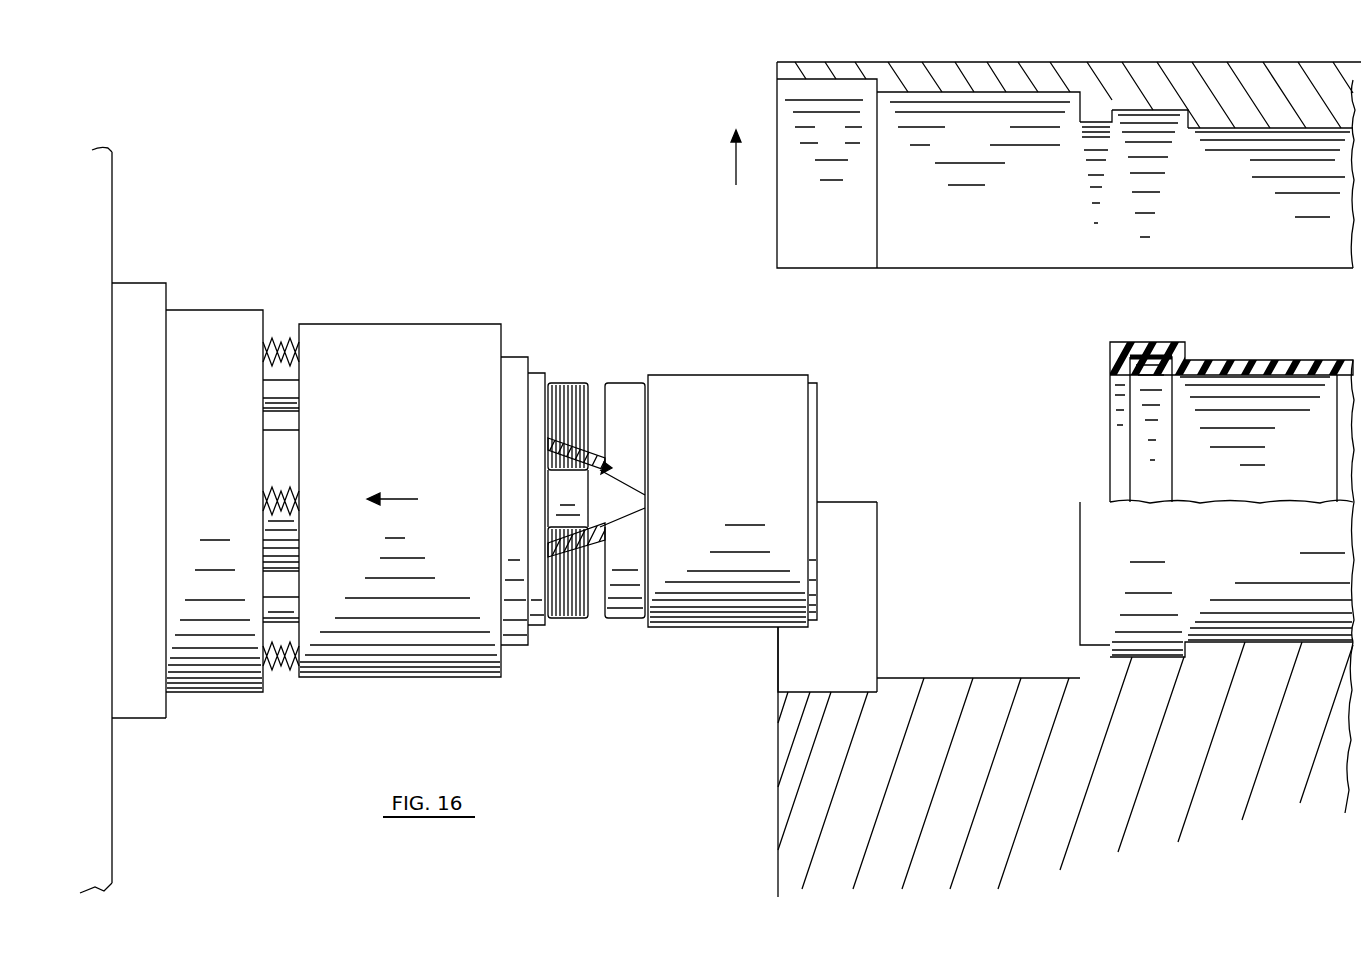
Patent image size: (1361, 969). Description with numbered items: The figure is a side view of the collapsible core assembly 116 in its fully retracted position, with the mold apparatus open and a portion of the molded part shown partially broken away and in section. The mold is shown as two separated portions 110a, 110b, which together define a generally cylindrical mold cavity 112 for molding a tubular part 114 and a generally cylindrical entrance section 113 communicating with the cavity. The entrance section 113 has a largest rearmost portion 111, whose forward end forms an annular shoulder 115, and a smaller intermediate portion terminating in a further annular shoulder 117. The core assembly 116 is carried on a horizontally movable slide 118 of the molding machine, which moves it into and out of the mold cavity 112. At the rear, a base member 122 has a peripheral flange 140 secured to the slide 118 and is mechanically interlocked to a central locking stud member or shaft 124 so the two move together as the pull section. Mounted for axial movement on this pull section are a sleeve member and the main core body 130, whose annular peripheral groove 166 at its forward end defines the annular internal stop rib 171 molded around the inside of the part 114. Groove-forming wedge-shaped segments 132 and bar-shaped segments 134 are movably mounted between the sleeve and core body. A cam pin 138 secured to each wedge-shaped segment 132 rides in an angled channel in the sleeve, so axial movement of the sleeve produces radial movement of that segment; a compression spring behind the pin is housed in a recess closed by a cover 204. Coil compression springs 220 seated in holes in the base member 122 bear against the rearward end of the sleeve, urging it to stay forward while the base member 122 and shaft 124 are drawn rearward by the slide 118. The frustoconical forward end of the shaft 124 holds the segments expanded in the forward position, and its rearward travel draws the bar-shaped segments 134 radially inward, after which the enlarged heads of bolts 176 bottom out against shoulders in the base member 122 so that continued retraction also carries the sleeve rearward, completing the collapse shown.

The mold portion 110a is at (778, 127).
The mold portion 110b is at (778, 805).
The rearmost portion of the entrance section 111 is at (853, 692).
The mold cavity 112 is at (1240, 128).
The entrance section 113 is at (1010, 678).
The tubular molded part 114 is at (1218, 362).
The annular shoulder 115 is at (878, 520).
The core assembly 116 is at (388, 322).
The annular shoulder 117 is at (1080, 660).
The slide 118 is at (113, 790).
The base member 122 is at (138, 283).
The central locking stud member or shaft 124 is at (275, 450).
The main core body or plug 130 is at (777, 372).
The wedge-shaped segments 132 is at (625, 393).
The bar-shaped segments 134 is at (570, 385).
The cam pin 138 is at (550, 440).
The peripheral flange 140 is at (140, 690).
The annular peripheral groove 166 is at (812, 393).
The annular internal stop rib 171 is at (1337, 385).
The bolts 176 is at (290, 392).
The cover 204 is at (355, 678).
The springs 220 is at (283, 353).